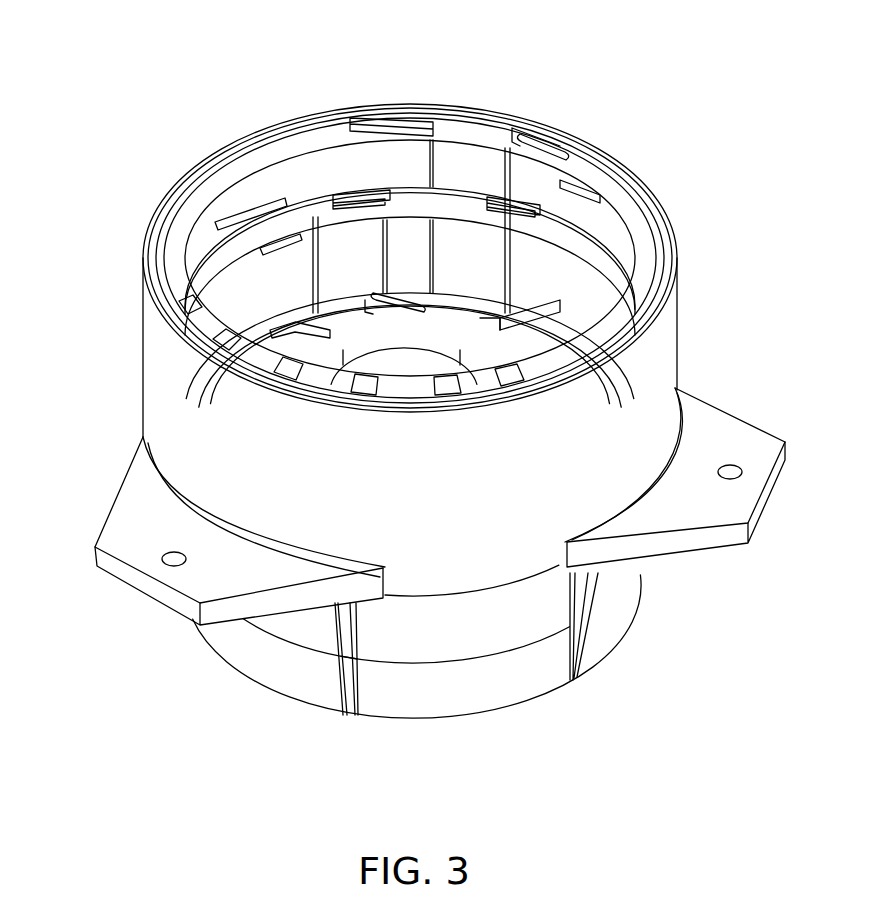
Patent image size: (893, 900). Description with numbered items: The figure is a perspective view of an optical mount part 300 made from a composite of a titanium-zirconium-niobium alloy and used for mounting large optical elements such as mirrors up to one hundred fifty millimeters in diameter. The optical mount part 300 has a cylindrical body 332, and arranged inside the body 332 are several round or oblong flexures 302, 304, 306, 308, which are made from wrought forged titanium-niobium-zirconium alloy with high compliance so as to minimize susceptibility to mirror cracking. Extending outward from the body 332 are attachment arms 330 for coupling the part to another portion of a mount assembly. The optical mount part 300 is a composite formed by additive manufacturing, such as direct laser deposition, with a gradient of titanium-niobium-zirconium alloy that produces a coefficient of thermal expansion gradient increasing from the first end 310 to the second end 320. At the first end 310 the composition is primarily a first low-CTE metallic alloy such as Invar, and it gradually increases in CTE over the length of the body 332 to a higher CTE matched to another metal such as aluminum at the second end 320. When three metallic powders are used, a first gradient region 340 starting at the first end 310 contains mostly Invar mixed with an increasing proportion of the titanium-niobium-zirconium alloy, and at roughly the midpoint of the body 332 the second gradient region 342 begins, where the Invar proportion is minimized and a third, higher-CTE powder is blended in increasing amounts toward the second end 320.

The optical mount part 300 is at (140, 85).
The flexure 302 is at (557, 157).
The flexure 304 is at (567, 240).
The flexure 306 is at (526, 333).
The flexure 308 is at (407, 363).
The first end 310 is at (672, 186).
The second end 320 is at (455, 735).
The attachment arm 330 is at (760, 443).
The cylindrical body 332 is at (442, 493).
The first gradient region 340 is at (60, 165).
The second gradient region 342 is at (60, 414).